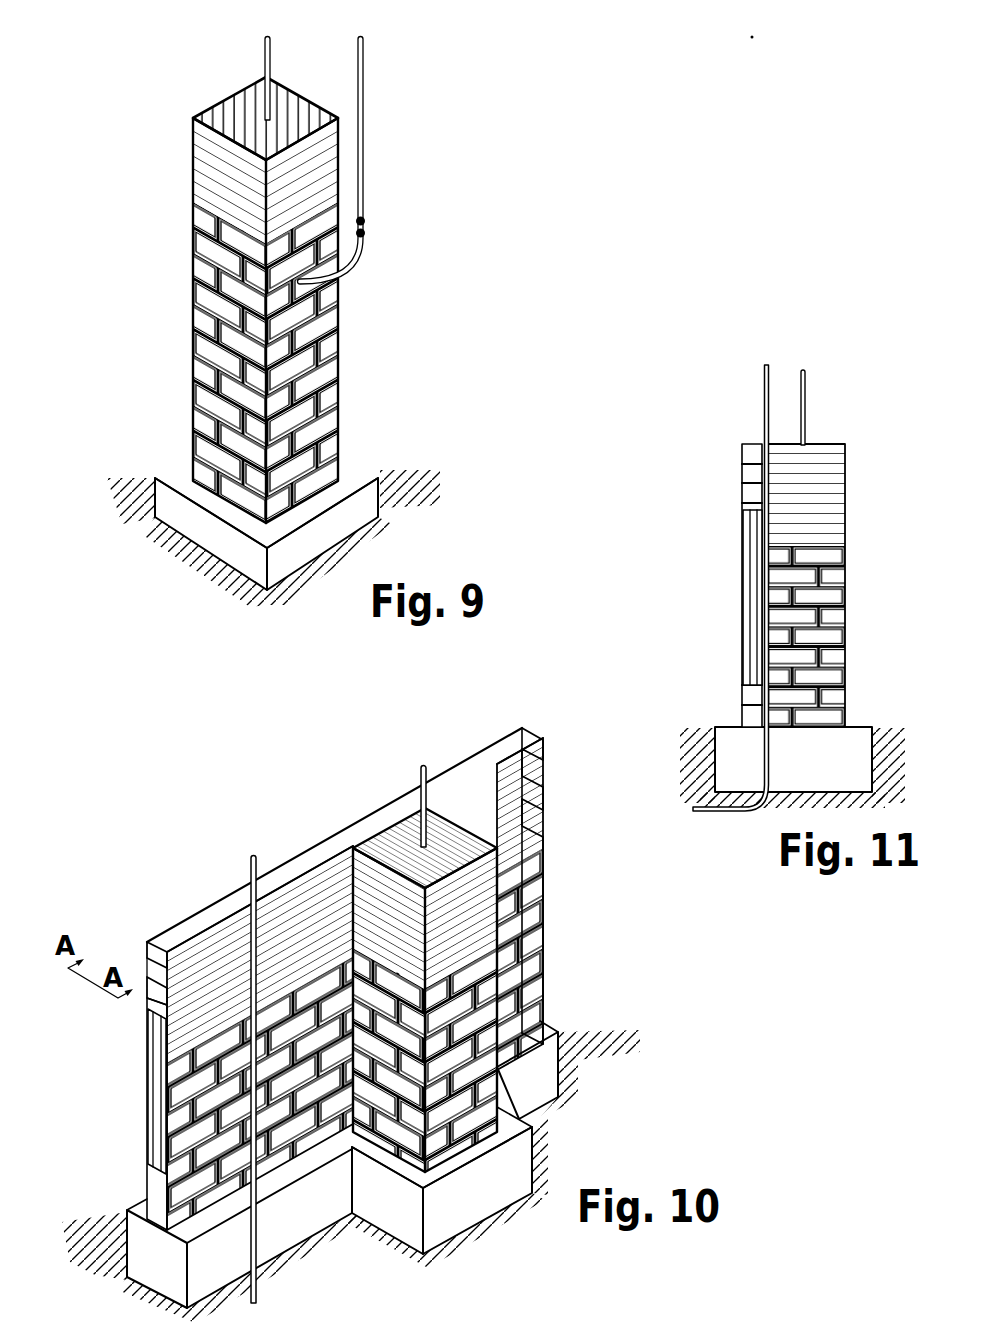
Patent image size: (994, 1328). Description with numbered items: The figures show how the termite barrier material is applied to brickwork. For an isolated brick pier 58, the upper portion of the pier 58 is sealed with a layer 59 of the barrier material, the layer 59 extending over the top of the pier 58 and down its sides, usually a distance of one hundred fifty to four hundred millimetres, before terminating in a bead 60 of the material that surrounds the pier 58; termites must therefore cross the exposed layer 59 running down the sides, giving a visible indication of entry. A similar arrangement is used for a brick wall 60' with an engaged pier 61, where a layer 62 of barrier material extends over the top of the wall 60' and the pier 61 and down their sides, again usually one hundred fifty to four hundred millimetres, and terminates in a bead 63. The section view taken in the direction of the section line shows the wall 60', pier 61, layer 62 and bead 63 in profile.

In FIG. 9, the isolated brick pier 58 is at (186, 309).
In FIG. 9, the layer of material 59 is at (311, 98).
In FIG. 9, the bead 60 is at (223, 181).
In FIG. 10, the brick wall 60' is at (404, 979).
In FIG. 11, the brick wall 60' is at (697, 581).
In FIG. 10, the engaged pier 61 is at (533, 999).
In FIG. 11, the engaged pier 61 is at (856, 537).
In FIG. 10, the layer of barrier material 62 is at (465, 762).
In FIG. 11, the layer of barrier material 62 is at (835, 463).
In FIG. 10, the bead 63 is at (547, 838).
In FIG. 11, the bead 63 is at (795, 548).